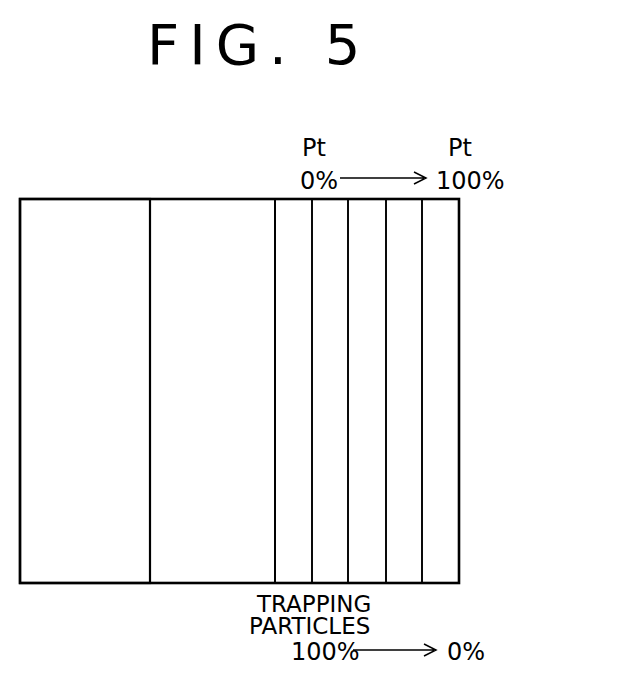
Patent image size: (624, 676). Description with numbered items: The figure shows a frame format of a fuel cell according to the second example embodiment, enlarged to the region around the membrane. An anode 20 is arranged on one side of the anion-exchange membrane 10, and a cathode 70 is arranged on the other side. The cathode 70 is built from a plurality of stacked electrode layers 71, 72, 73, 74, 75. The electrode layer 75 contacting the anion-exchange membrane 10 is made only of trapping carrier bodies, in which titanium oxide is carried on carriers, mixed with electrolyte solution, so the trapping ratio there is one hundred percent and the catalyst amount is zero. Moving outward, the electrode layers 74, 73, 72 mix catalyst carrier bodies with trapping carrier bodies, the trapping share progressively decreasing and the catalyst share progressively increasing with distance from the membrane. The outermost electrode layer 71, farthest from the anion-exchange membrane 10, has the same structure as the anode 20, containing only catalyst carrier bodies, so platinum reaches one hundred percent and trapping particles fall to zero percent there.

The anion-exchange membrane 10 is at (208, 208).
The anode 20 is at (77, 208).
The cathode 70 is at (548, 242).
The electrode layer 71 is at (437, 432).
The electrode layer 72 is at (398, 395).
The electrode layer 73 is at (360, 360).
The electrode layer 74 is at (333, 323).
The electrode layer 75 is at (292, 288).